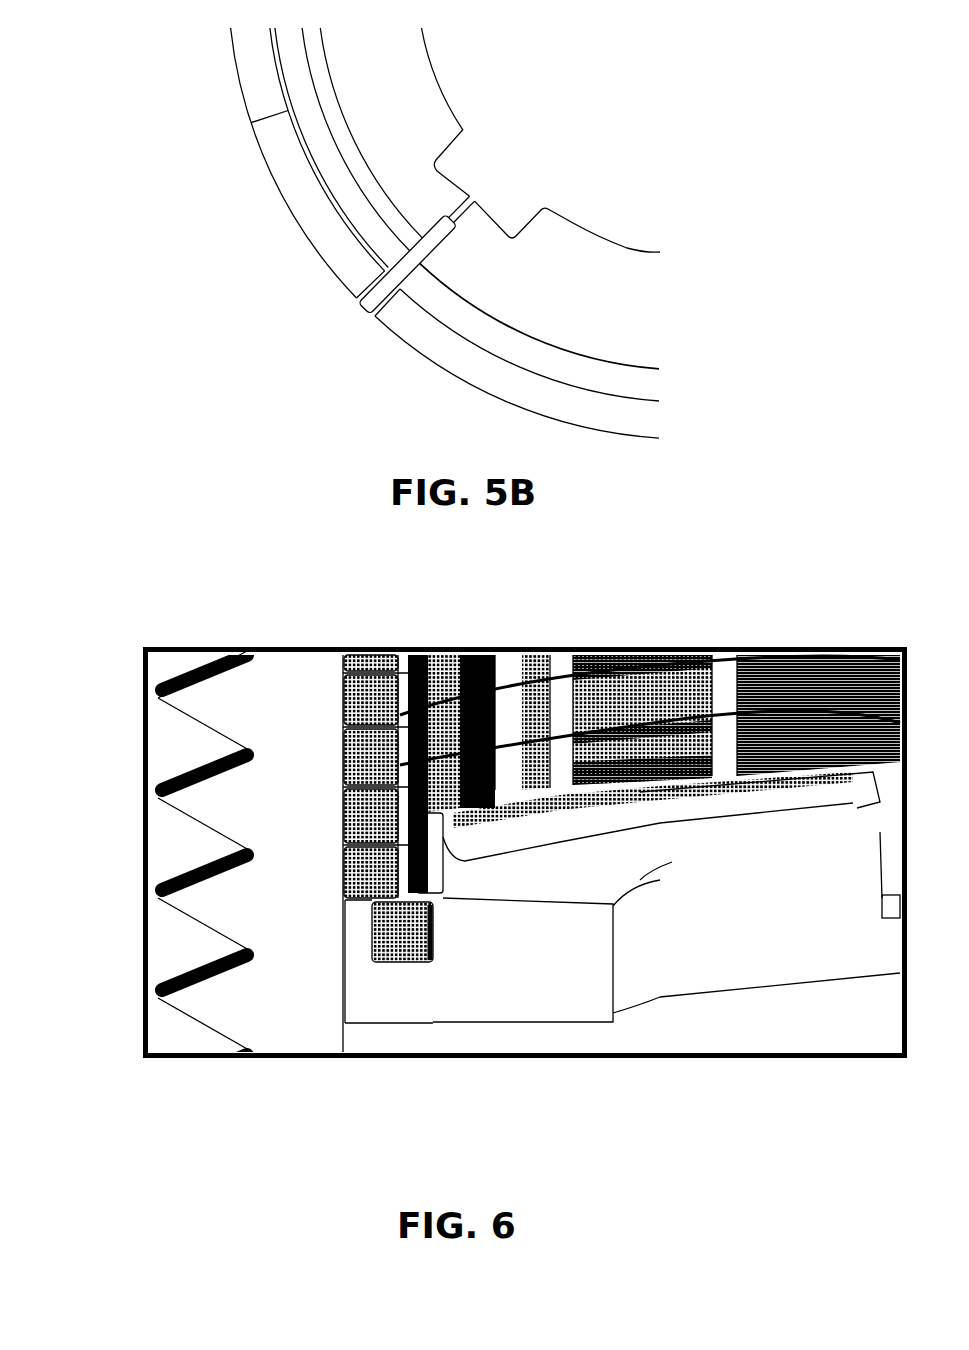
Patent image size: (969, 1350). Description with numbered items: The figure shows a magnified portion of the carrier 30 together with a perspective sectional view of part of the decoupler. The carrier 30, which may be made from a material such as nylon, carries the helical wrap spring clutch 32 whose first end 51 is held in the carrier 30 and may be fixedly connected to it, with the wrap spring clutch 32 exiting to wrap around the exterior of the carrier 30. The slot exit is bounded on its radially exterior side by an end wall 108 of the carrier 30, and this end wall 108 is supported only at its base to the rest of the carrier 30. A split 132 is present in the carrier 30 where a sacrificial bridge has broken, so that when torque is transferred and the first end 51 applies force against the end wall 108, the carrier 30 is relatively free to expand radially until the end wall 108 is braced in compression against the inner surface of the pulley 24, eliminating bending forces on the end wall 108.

In FIG. 5B, the split 132 is at (470, 200).
In FIG. 5B, the carrier 30 is at (587, 253).
In FIG. 6, the carrier 30 is at (440, 997).
In FIG. 6, the pulley 24 is at (235, 692).
In FIG. 6, the wrap spring clutch 32 is at (362, 757).
In FIG. 6, the end wall 108 is at (357, 920).
In FIG. 6, the first end 51 is at (387, 937).